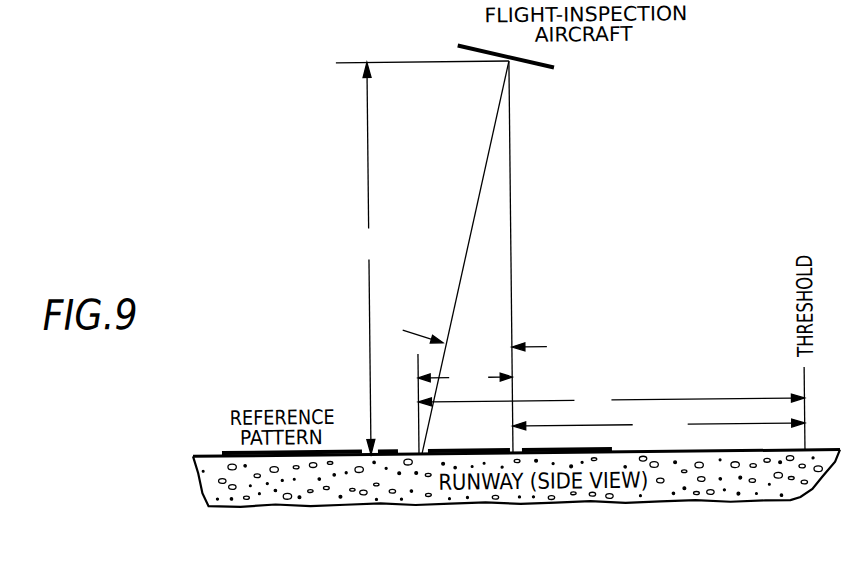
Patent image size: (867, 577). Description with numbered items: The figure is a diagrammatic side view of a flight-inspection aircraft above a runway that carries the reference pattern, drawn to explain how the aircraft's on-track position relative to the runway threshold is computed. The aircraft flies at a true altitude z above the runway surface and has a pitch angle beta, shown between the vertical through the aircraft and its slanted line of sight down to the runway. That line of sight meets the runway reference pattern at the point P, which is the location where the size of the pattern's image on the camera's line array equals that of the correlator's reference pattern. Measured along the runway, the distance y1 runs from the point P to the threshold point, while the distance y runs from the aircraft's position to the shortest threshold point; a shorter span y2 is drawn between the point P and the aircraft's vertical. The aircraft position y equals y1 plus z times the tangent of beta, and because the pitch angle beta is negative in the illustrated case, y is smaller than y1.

The true altitude above runway z is at (367, 258).
The aircraft pitch angle beta is at (475, 343).
The horizontal distance from point P to aircraft ground position y2 is at (465, 380).
The distance from P to the threshold point y1 is at (611, 401).
The aircraft distance to the shortest threshold point y is at (659, 424).
The point on the runway reference pattern P is at (410, 404).